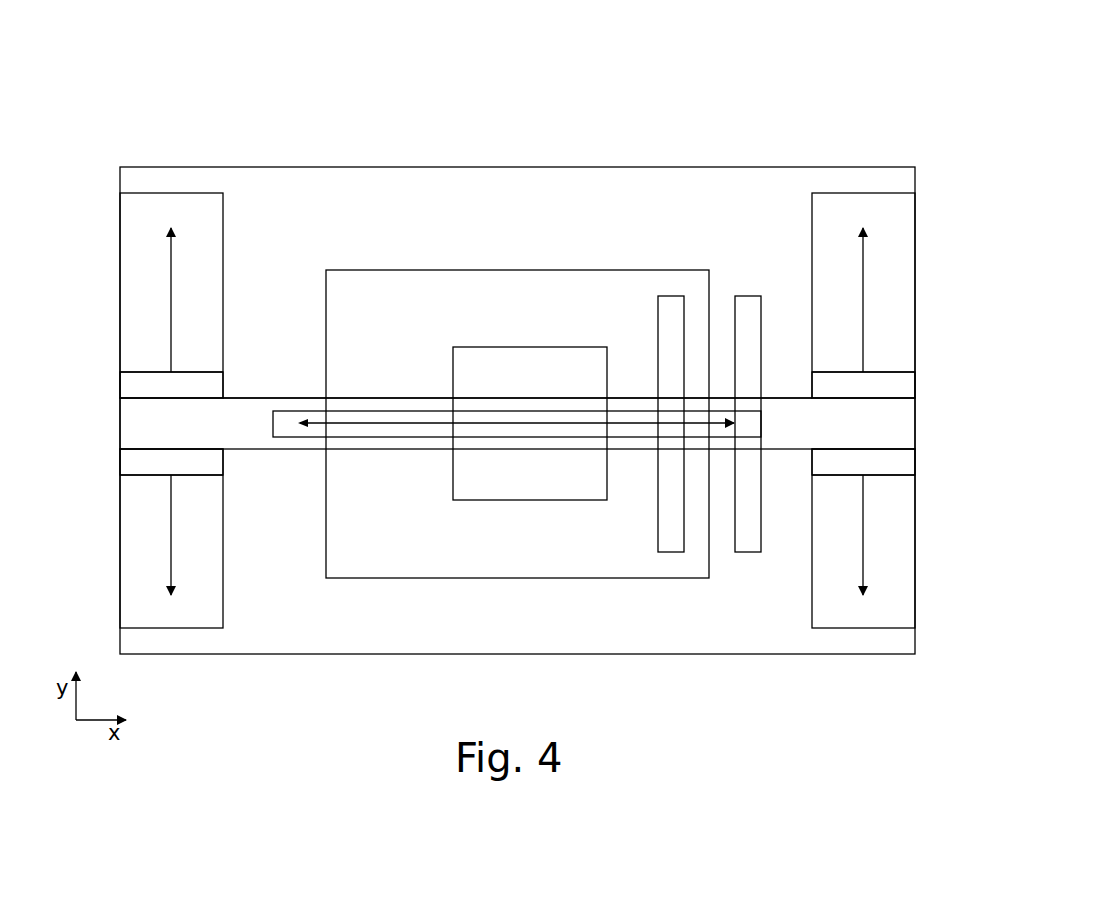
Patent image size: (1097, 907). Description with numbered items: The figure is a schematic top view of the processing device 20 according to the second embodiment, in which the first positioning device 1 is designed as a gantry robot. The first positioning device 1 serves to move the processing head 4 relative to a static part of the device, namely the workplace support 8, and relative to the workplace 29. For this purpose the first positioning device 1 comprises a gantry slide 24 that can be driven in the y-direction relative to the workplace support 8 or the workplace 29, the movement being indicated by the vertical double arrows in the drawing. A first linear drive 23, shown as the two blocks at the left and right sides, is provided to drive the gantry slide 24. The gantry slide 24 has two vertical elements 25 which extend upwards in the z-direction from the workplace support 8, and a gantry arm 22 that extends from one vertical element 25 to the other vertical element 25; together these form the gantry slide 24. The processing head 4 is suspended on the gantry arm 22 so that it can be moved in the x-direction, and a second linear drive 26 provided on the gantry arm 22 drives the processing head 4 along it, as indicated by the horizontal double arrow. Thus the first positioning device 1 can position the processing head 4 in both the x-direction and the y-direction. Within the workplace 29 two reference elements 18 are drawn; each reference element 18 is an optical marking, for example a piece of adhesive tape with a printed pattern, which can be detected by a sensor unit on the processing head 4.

The first positioning device 1 is at (86, 186).
The processing head 4 is at (525, 365).
The workplace support 8 is at (328, 182).
The reference element 18 is at (672, 300).
The processing device 20 is at (820, 104).
The gantry arm 22 is at (261, 398).
The first linear drive 23 is at (120, 296).
The gantry slide 24 is at (95, 417).
The vertical element 25 is at (130, 466).
The second linear drive 26 is at (292, 440).
The workplace 29 is at (417, 285).